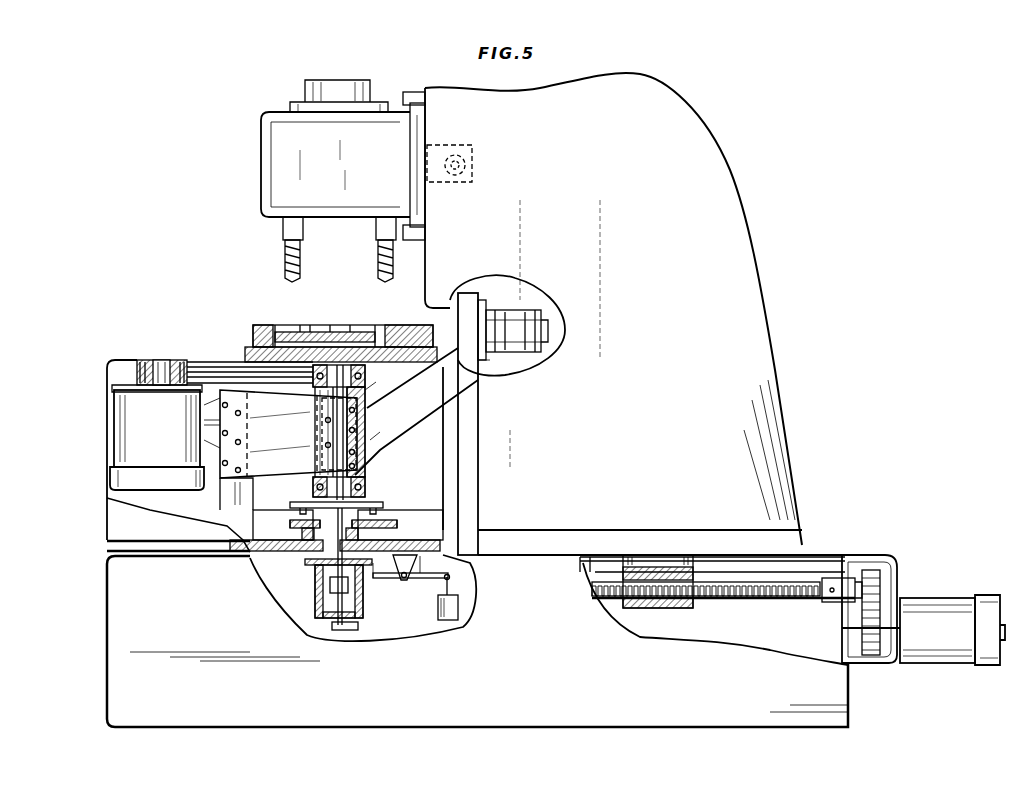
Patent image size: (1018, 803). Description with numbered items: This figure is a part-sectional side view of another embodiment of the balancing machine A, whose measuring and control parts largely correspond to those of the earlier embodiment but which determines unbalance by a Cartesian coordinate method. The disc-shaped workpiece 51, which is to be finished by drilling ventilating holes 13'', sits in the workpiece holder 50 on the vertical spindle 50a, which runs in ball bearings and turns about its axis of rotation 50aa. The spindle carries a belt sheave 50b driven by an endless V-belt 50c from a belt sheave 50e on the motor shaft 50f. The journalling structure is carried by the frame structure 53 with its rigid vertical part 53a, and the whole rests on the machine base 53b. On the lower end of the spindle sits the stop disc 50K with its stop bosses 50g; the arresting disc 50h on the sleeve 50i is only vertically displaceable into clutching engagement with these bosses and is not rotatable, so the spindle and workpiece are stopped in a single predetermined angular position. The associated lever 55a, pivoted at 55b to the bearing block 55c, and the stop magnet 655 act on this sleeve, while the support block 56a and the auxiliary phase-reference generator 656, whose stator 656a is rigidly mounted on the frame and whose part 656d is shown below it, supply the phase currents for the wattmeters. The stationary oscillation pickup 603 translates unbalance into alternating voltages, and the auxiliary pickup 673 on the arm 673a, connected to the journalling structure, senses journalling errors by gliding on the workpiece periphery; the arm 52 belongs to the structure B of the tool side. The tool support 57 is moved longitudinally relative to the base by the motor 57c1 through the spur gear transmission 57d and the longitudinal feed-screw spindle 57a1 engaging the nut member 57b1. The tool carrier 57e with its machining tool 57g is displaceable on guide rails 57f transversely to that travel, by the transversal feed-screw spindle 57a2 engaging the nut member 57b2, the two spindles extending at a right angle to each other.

The tool support 57 is at (722, 275).
The guide rails 57f is at (413, 95).
The tool carrier 57e is at (261, 158).
The machining tool 57g is at (378, 252).
The nut member 57b2 is at (465, 147).
The transversal feed-screw spindle 57a2 is at (467, 166).
The auxiliary pickup 673 is at (505, 310).
The bearing bracket 673a is at (472, 358).
The arm 52 is at (368, 448).
The ventilating holes 13'' is at (341, 327).
The workpiece 51 is at (262, 325).
The V-belt 50c is at (230, 362).
The belt sheave 50e is at (137, 373).
The motor shaft 50f is at (160, 360).
The workpiece holder 50 is at (112, 420).
The frame structure 53 is at (107, 512).
The rigid vertical frame part 53a is at (220, 492).
The axis of rotation 50aa is at (325, 395).
The belt sheave 50b is at (367, 372).
The spindle 50a is at (350, 392).
The oscillation pickup 603 is at (320, 448).
The stop disc 50K is at (350, 500).
The stop bosses 50g is at (378, 508).
The arresting disc 50h is at (360, 528).
The support block 56a is at (302, 538).
The sleeve 50i is at (305, 562).
The auxiliary phase-reference generator 656 is at (315, 575).
The stator 656a is at (322, 600).
The piston rod end 656d is at (345, 632).
The bearing block 55c is at (445, 562).
The lever 55a is at (384, 578).
The pivot 55b is at (430, 580).
The solenoid 655 is at (458, 612).
The machine base 53b is at (107, 562).
The longitudinal feed-screw spindle 57a1 is at (748, 600).
The nut member 57b1 is at (652, 608).
The spur gear transmission 57d is at (880, 590).
The motor 57c1 is at (935, 664).
The balancing machine A is at (273, 436).
The assembly B is at (589, 244).